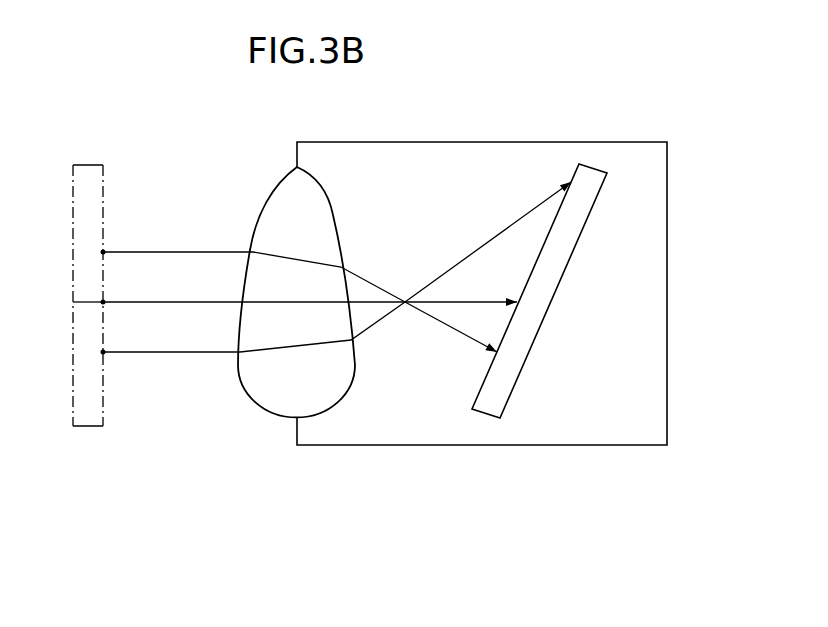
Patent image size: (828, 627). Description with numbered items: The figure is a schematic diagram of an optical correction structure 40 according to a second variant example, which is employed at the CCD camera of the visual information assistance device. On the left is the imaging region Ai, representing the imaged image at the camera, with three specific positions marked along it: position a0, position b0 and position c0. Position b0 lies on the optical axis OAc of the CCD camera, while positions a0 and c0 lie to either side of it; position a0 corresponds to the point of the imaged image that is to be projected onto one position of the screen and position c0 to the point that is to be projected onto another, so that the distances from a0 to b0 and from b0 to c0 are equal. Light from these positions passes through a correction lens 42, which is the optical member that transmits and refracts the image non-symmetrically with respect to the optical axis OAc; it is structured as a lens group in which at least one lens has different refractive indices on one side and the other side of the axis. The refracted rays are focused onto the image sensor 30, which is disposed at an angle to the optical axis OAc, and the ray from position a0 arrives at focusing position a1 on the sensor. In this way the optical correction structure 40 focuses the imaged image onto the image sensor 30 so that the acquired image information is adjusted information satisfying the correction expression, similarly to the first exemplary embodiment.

The optical correction structure 40 is at (459, 423).
The correction lens 42 is at (259, 411).
The image sensor 30 is at (547, 288).
The imaging region Ai is at (85, 426).
The optical axis OAc is at (223, 302).
The position a0 is at (103, 252).
The position b0 is at (103, 302).
The position c0 is at (103, 352).
The focusing position a1 is at (492, 353).